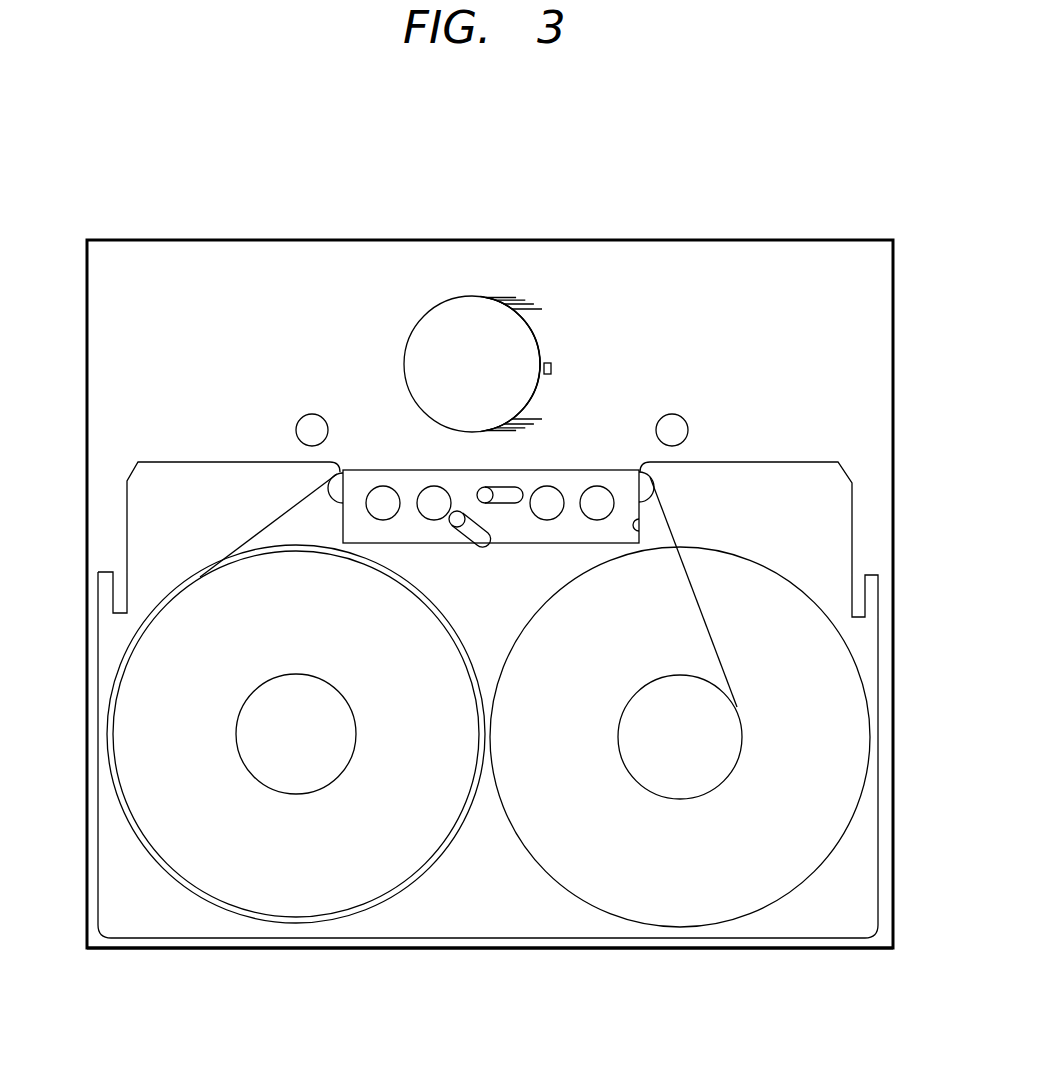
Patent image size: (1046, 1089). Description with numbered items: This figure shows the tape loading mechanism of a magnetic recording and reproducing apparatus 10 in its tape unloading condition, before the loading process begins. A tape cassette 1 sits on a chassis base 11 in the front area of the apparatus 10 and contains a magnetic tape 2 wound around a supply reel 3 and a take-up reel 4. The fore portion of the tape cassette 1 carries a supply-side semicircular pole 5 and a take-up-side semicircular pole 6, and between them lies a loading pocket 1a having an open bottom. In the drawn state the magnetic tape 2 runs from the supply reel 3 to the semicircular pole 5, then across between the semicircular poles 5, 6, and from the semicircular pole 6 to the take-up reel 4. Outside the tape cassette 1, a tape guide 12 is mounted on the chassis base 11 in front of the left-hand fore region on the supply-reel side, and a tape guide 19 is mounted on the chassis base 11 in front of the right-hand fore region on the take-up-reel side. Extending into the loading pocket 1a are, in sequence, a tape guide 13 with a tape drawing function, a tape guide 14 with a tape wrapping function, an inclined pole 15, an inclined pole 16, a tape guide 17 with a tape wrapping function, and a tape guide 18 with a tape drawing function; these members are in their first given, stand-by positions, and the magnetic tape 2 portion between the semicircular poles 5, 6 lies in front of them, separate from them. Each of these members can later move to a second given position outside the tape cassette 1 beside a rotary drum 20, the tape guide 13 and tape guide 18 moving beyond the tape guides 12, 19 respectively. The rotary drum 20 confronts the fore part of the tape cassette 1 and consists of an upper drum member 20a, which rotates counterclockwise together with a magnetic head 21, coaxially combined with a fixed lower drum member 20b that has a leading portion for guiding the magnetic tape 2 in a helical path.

The tape cassette 1 is at (182, 941).
The loading pocket 1a is at (640, 524).
The magnetic tape 2 is at (255, 532).
The supply reel 3 is at (308, 928).
The take-up reel 4 is at (735, 928).
The supply-side semicircular pole 5 is at (326, 489).
The take-up-side semicircular pole 6 is at (652, 487).
The magnetic recording and reproducing apparatus 10 is at (135, 236).
The chassis base 11 is at (106, 950).
The tape guide 12 is at (297, 423).
The tape guide 13 is at (381, 487).
The tape guide 14 is at (433, 498).
The inclined pole 15 is at (465, 535).
The inclined pole 16 is at (510, 503).
The tape guide 17 is at (548, 500).
The tape guide 18 is at (598, 500).
The tape guide 19 is at (686, 422).
The rotary drum 20 is at (520, 284).
The upper drum member 20a is at (521, 303).
The lower drum member 20b is at (553, 330).
The magnetic head 21 is at (551, 369).